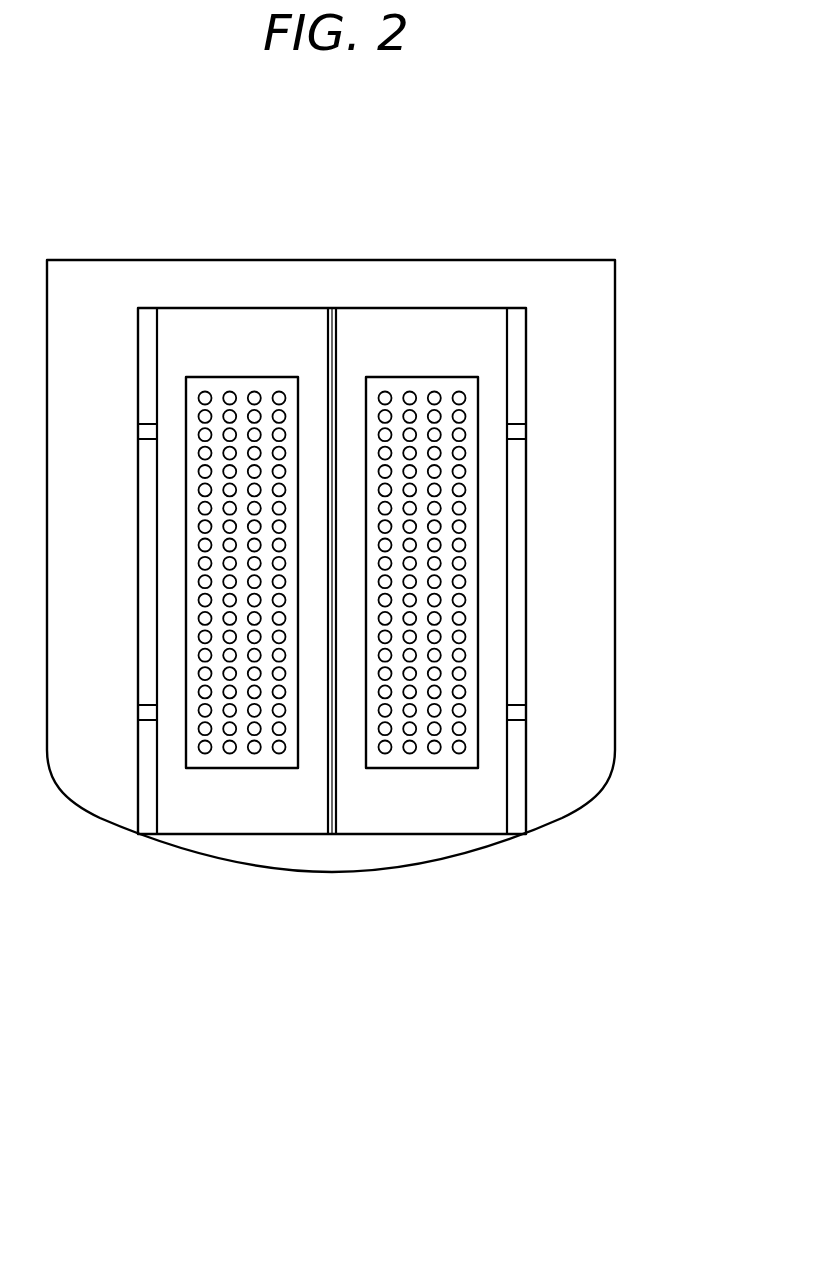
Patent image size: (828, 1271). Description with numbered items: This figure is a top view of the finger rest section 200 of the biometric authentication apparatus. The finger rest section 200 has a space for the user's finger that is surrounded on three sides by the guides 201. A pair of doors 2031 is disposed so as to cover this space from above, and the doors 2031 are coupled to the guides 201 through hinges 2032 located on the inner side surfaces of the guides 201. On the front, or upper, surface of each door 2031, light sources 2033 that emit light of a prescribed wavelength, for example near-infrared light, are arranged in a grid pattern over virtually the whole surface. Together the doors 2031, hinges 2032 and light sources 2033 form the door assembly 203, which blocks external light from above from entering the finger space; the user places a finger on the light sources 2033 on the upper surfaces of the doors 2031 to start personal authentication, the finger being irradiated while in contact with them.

The finger rest section 200 is at (577, 187).
The guides 201 is at (602, 365).
The door assembly 203 is at (513, 1032).
The doors 2031 is at (252, 822).
The hinges 2032 is at (147, 822).
The light sources 2033 is at (230, 397).